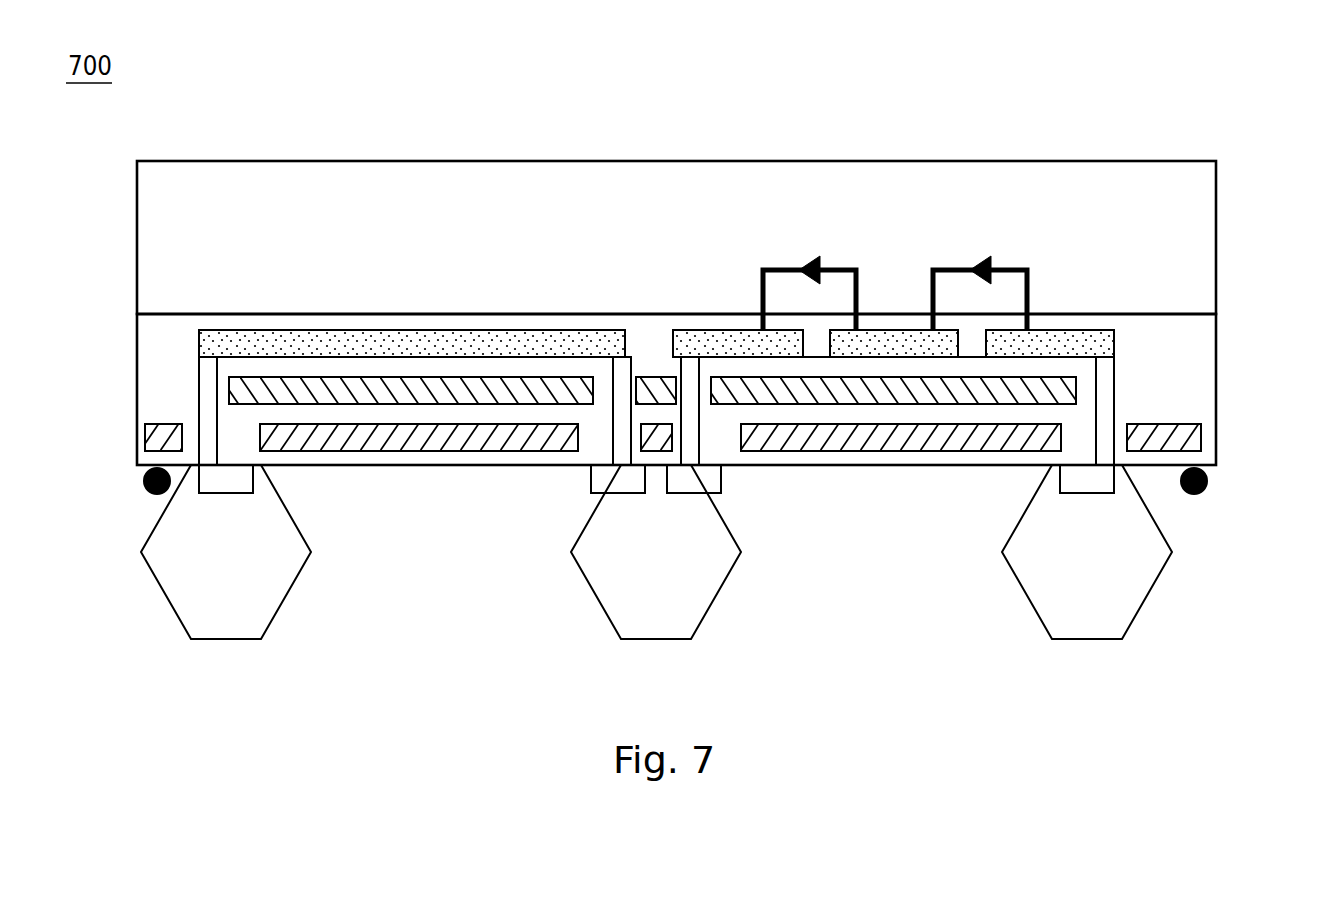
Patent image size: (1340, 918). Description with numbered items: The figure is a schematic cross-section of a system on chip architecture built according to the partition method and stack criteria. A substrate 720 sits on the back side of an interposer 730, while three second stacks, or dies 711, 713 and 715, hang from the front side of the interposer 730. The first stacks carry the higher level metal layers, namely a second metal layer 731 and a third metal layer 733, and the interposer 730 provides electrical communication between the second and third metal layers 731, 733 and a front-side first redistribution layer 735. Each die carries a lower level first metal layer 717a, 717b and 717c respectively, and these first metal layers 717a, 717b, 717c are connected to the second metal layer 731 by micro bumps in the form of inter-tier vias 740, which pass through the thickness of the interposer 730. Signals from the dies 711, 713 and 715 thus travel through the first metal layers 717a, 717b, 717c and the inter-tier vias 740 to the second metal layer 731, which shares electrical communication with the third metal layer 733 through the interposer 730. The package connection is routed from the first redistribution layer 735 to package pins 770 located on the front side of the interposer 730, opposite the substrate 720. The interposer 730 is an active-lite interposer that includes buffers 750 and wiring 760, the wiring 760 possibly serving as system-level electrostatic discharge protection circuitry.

The second stack 711 is at (273, 582).
The second stack 713 is at (703, 582).
The second stack 715 is at (1134, 582).
The first metal layer 717a is at (240, 478).
The first metal layer 717b is at (708, 480).
The first metal layer 717c is at (1070, 478).
The substrate 720 is at (1207, 243).
The interposer 730 is at (1207, 401).
The second metal layer 731 is at (218, 345).
The third metal layer 733 is at (1070, 390).
The first redistribution layer 735 is at (1193, 437).
The inter-tier via 740 is at (207, 400).
The buffer 750 is at (980, 255).
The wiring 760 is at (810, 255).
The package pin 770 is at (1207, 481).